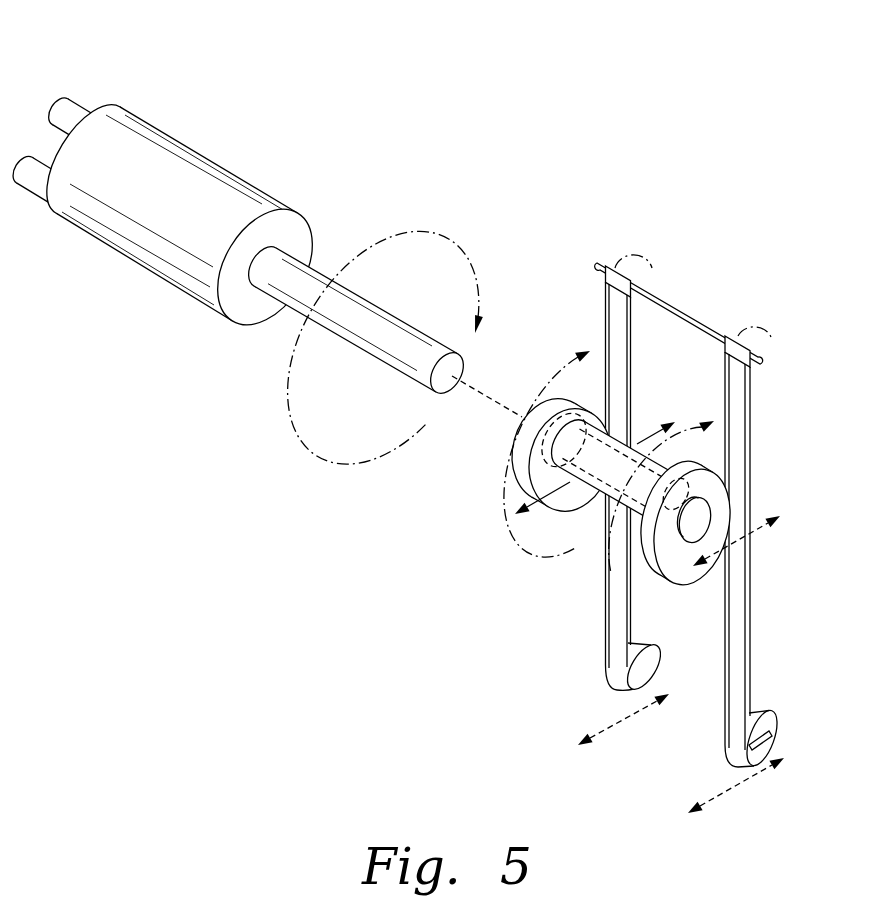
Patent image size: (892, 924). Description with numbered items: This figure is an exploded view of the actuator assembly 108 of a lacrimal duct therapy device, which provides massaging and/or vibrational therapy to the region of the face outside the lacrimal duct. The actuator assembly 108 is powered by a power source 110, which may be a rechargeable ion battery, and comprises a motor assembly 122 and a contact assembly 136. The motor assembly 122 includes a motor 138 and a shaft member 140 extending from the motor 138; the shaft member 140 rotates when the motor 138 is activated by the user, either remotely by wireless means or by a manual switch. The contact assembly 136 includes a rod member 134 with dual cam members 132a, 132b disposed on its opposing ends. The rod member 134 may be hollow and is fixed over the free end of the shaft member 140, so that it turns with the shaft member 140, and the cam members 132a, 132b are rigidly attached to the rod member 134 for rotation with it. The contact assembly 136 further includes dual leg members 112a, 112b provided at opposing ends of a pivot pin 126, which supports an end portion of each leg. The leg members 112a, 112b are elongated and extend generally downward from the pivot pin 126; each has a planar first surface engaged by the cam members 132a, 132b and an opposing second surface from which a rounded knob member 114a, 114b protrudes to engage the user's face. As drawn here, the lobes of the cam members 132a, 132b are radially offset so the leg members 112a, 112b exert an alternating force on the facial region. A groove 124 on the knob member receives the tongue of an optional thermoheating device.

The actuator assembly 108 is at (425, 419).
The power source 110 is at (72, 94).
The leg member 112a is at (606, 614).
The leg member 112b is at (725, 694).
The knob member 114a is at (688, 651).
The knob member 114b is at (792, 719).
The motor assembly 122 is at (265, 221).
The groove 124 is at (777, 728).
The pivot pin 126 is at (682, 311).
The cam member 132a is at (514, 486).
The cam member 132b is at (648, 578).
The rod member 134 is at (577, 506).
The contact assembly 136 is at (673, 482).
The motor 138 is at (210, 158).
The shaft member 140 is at (393, 308).